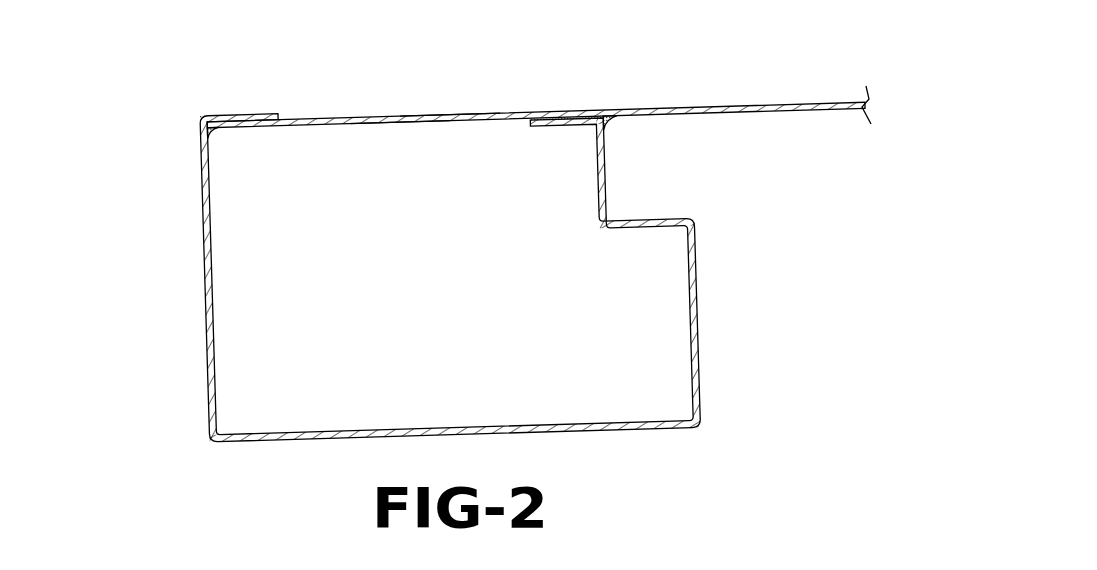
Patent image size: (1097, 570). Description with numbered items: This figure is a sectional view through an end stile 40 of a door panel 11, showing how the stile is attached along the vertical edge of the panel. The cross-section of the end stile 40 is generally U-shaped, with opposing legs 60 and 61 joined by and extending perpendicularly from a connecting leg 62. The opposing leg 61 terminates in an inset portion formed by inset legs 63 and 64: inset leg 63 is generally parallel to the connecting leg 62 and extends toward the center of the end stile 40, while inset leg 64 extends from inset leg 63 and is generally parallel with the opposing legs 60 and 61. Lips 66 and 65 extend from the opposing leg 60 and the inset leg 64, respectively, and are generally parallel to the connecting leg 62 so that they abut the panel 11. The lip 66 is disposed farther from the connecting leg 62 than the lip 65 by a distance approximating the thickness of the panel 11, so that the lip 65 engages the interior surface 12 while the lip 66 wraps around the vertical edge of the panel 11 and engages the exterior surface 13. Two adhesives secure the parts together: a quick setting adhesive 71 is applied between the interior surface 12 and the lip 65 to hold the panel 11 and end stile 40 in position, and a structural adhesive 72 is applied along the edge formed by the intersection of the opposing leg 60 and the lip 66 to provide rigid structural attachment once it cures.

The panel 11 is at (338, 112).
The interior surface 12 is at (392, 128).
The exterior surface 13 is at (432, 116).
The end stile 40 is at (712, 400).
The opposing leg 60 is at (204, 318).
The opposing leg 61 is at (697, 331).
The connecting leg 62 is at (344, 432).
The inset leg 63 is at (645, 225).
The inset leg 64 is at (605, 178).
The lip 65 is at (566, 130).
The lip 66 is at (239, 117).
The quick setting adhesive 71 is at (525, 123).
The structural adhesive 72 is at (215, 131).